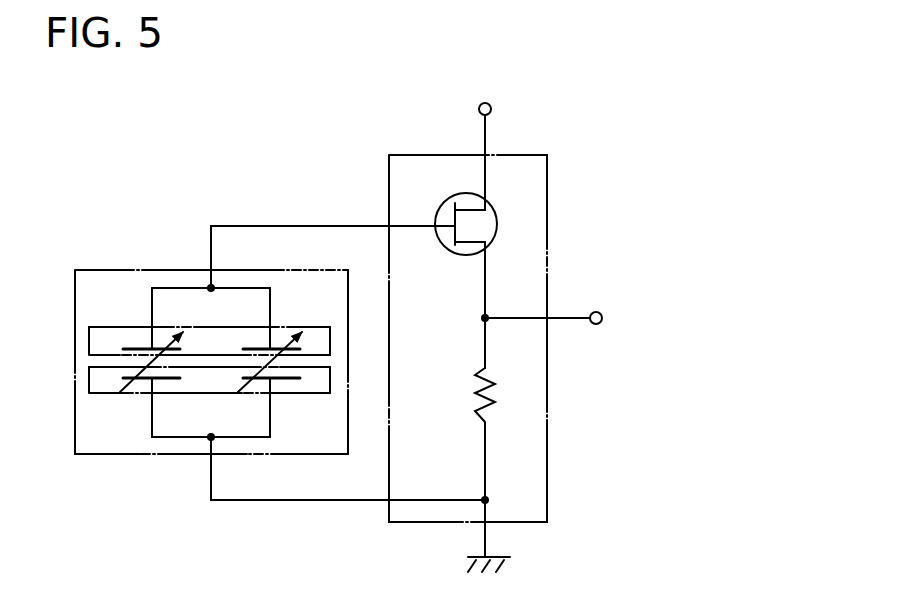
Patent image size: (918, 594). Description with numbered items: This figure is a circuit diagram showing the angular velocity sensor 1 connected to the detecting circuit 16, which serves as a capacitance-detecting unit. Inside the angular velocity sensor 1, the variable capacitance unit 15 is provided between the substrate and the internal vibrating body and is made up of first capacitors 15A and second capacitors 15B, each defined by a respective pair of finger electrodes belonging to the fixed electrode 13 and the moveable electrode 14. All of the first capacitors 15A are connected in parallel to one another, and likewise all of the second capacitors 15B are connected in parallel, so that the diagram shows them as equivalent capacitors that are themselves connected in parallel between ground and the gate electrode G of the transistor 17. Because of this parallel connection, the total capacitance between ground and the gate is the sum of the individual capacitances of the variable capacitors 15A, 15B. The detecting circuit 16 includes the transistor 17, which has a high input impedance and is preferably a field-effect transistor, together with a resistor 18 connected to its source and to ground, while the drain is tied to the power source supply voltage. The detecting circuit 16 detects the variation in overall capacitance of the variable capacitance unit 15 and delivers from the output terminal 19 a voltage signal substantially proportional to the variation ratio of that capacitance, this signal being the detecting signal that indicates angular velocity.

The angular velocity sensor 1 is at (152, 268).
The fixed electrode 13 is at (107, 325).
The moveable electrode 14 is at (107, 395).
The variable capacitance unit 15 is at (139, 455).
The first capacitor 15A is at (143, 348).
The second capacitor 15B is at (340, 410).
The detecting circuit 16 is at (386, 184).
The transistor 17 is at (462, 250).
The resistor 18 is at (483, 410).
The output terminal 19 is at (602, 313).